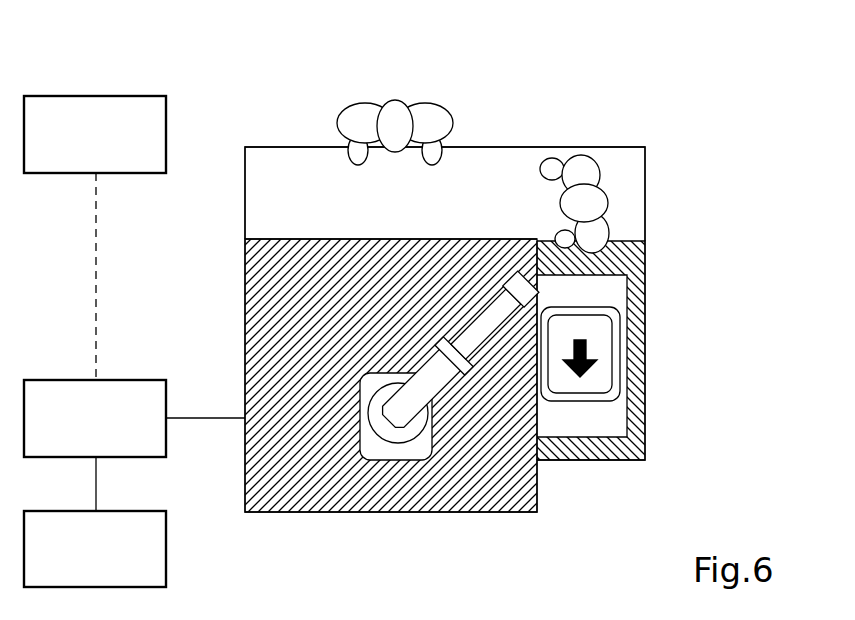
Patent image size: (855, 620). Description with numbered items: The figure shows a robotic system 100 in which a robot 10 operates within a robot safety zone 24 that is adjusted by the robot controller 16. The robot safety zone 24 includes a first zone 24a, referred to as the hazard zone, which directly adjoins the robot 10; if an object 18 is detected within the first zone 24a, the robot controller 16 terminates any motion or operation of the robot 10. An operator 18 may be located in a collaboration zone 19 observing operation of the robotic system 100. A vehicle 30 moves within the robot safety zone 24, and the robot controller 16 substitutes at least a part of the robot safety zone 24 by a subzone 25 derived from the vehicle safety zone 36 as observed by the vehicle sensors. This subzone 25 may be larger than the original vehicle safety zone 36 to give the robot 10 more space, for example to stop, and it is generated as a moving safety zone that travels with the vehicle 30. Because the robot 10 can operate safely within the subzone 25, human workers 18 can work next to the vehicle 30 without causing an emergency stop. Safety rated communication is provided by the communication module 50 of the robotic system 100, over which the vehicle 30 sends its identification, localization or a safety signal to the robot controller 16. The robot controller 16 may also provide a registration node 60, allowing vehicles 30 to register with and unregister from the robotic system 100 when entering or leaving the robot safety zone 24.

The robotic system 100 is at (590, 93).
The robot 10 is at (392, 468).
The robot controller 16 is at (72, 380).
The object 18 is at (449, 104).
The collaboration zone 19 is at (243, 205).
The robot safety zone 24 is at (243, 345).
The first zone 24a is at (264, 298).
The subzone 25 is at (650, 294).
The vehicle 30 is at (636, 322).
The vehicle safety zone 36 is at (636, 382).
The communication module 50 is at (166, 530).
The registration node 60 is at (166, 122).